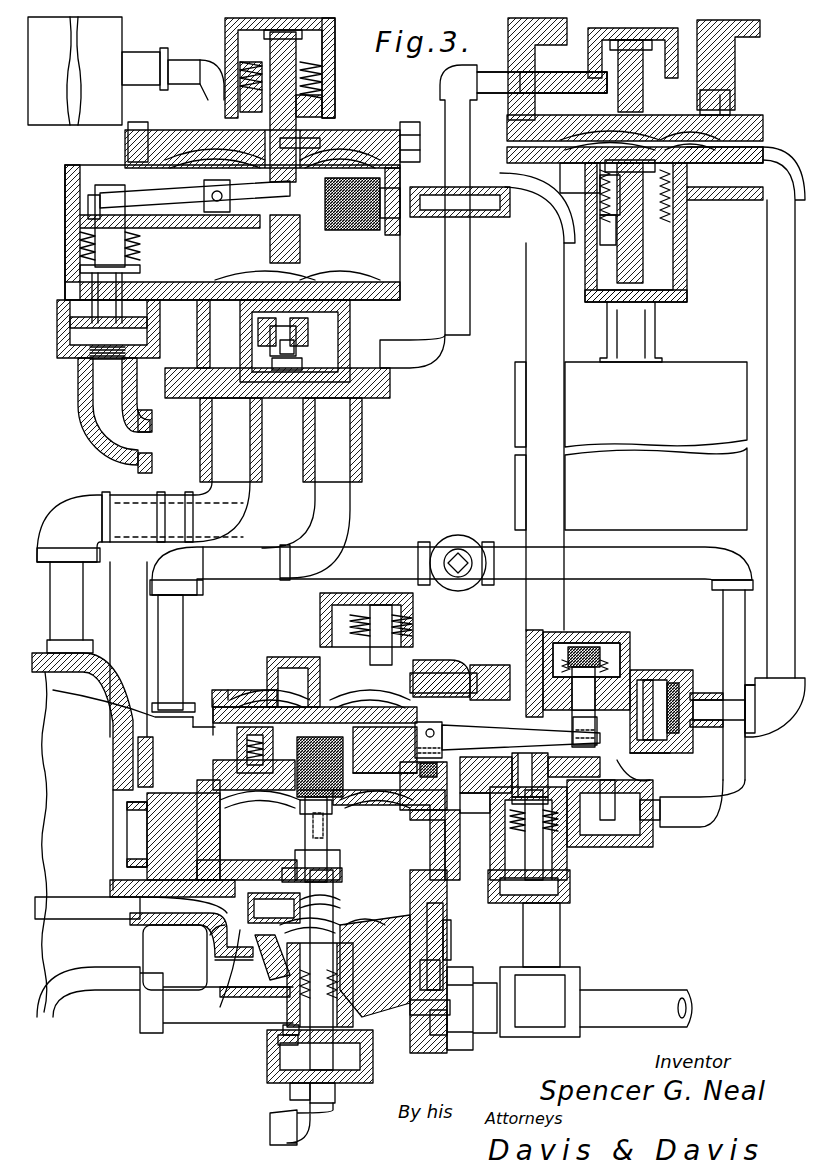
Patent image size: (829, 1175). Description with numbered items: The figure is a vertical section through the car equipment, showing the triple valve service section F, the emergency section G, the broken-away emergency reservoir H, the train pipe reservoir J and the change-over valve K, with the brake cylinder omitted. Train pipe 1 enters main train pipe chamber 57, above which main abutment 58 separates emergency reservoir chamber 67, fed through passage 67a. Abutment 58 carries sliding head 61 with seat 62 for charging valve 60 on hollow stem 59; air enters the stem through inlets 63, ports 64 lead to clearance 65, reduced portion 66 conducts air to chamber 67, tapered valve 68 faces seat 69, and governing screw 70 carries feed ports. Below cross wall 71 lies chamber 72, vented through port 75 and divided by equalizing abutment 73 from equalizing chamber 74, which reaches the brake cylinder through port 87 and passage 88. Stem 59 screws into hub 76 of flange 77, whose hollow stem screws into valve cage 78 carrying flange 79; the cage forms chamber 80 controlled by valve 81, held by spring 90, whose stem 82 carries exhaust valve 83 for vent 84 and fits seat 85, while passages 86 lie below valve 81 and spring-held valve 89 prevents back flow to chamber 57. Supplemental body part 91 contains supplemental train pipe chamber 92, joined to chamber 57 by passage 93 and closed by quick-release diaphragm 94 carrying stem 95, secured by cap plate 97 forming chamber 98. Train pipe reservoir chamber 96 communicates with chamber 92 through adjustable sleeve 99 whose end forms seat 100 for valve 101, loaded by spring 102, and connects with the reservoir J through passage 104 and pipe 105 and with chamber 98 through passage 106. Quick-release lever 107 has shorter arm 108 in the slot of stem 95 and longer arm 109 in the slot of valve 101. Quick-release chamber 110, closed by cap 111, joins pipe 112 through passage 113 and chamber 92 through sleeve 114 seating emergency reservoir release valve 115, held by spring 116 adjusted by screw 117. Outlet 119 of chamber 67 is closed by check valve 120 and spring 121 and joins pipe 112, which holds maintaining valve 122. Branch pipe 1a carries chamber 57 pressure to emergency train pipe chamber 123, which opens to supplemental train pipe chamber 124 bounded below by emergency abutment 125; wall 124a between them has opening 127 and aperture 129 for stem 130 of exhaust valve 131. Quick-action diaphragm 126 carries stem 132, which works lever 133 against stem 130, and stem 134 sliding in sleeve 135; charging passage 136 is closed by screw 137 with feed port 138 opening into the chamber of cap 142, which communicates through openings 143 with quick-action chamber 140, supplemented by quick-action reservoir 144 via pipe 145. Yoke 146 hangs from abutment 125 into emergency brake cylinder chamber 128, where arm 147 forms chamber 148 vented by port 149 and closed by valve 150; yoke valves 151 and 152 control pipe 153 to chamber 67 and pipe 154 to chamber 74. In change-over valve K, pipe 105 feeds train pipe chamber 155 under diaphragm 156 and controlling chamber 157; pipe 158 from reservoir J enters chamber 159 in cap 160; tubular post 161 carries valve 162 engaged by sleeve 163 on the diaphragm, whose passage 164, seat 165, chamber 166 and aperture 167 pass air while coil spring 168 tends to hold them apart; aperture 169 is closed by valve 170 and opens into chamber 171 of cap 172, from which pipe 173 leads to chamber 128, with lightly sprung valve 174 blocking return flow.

The train pipe 1 is at (665, 990).
The branch pipe 1a is at (582, 598).
The main train pipe chamber 57 is at (437, 890).
The main abutment or diaphragm 58 is at (410, 805).
The hollow valve stem 59 is at (342, 875).
The charging valve 60 is at (305, 840).
The sliding head 61 is at (327, 825).
The valve seat 62 is at (334, 783).
The inlets 63 is at (340, 845).
The ports 64 is at (300, 808).
The clearance 65 is at (300, 810).
The reduced portion 66 is at (260, 806).
The emergency reservoir chamber 67 is at (385, 782).
The passage 67a is at (237, 758).
The downwardly tapered valve 68 is at (262, 812).
The seat 69 is at (247, 864).
The governing screw 70 is at (320, 742).
The cross wall 71 is at (238, 934).
The chamber 72 is at (225, 960).
The equalizing abutment 73 is at (450, 1000).
The equalizing chamber 74 is at (443, 965).
The port 75 is at (443, 912).
The hub 76 is at (274, 908).
The flange 77 is at (451, 935).
The valve cage 78 is at (283, 1030).
The flange 79 is at (262, 950).
The small chamber 80 is at (447, 1035).
The valve 81 is at (430, 1030).
The stem 82 is at (281, 1094).
The exhaust valve 83 is at (337, 1095).
The vent 84 is at (330, 1122).
The seat 85 is at (275, 1065).
The passages 86 is at (287, 1000).
The port 87 is at (222, 1005).
The passage 88 is at (175, 957).
The valve 89 is at (390, 905).
The spring 90 is at (278, 1040).
The supplemental body part 91 is at (252, 690).
The supplemental train pipe chamber 92 is at (456, 776).
The passage 93 is at (435, 845).
The quick-release diaphragm 94 is at (325, 640).
The stem 95 is at (443, 682).
The train pipe reservoir chamber 96 is at (612, 640).
The cap plate 97 is at (275, 657).
The chamber 98 is at (462, 662).
The adjustable sleeve 99 is at (553, 660).
The valve seat 100 is at (690, 730).
The valve 101 is at (650, 757).
The spring 102 is at (600, 667).
The passage 104 is at (650, 680).
The pipe 105 is at (770, 628).
The passage 106 is at (503, 680).
The quick-release lever 107 is at (521, 737).
The shorter arm 108 is at (420, 740).
The longer arm 109 is at (571, 735).
The quick-release chamber 110 is at (552, 852).
The cap 111 is at (485, 815).
The pipe 112 is at (183, 616).
The passage 113 is at (640, 840).
The adjustable sleeve 114 is at (648, 771).
The emergency reservoir release valve 115 is at (615, 790).
The spring 116 is at (525, 753).
The screw 117 is at (570, 880).
The outlet 119 is at (193, 727).
The check valve 120 is at (193, 715).
The spring 121 is at (222, 700).
The maintaining valve 122 is at (458, 535).
The emergency train pipe chamber 123 is at (362, 194).
The supplemental train pipe chamber 124 is at (232, 232).
The wall 124a is at (95, 193).
The emergency abutment 125 is at (326, 275).
The quick-action abutment or diaphragm 126 is at (272, 165).
The opening 127 is at (268, 246).
The emergency brake cylinder chamber 128 is at (308, 326).
The aperture 129 is at (88, 214).
The stem 130 is at (110, 226).
The exhaust valve 131 is at (80, 270).
The stem 132 is at (305, 150).
The lever 133 is at (410, 122).
The upwardly extending stem 134 is at (330, 100).
The sleeve 135 is at (322, 82).
The axial charging passage 136 is at (242, 94).
The screw 137 is at (232, 30).
The feed port 138 is at (296, 45).
The quick-action chamber 140 is at (125, 143).
The cap 142 is at (335, 28).
The openings 143 is at (222, 88).
The quick-action reservoir 144 is at (75, 71).
The pipe 145 is at (148, 75).
The yoke 146 is at (310, 312).
The arm 147 is at (270, 346).
The chamber 148 is at (296, 346).
The port 149 is at (258, 326).
The valve 150 is at (302, 364).
The valve 151 is at (362, 415).
The valve 152 is at (200, 415).
The pipe 153 is at (345, 500).
The pipe 154 is at (245, 500).
The large train pipe chamber 155 is at (560, 158).
The flexible diaphragm or movable abutment 156 is at (738, 108).
The controlling chamber 157 is at (735, 100).
The pipe 158 is at (655, 346).
The chamber 159 is at (688, 296).
The cap 160 is at (688, 266).
The tubular post 161 is at (644, 246).
The valve 162 is at (672, 220).
The sleeve 163 is at (672, 205).
The passage 164 is at (720, 138).
The valve seat 165 is at (725, 148).
The small chamber 166 is at (600, 185).
The aperture 167 is at (560, 170).
The coil spring 168 is at (600, 225).
The aperture 169 is at (760, 30).
The valve 170 is at (722, 90).
The chamber 171 is at (590, 40).
The cap 172 is at (672, 38).
The pipe 173 is at (498, 72).
The valve 174 is at (628, 42).
The triple valve service section F is at (228, 690).
The emergency section G is at (65, 246).
The emergency reservoir H is at (40, 655).
The train pipe reservoir J is at (631, 446).
The change-over valve K is at (720, 95).